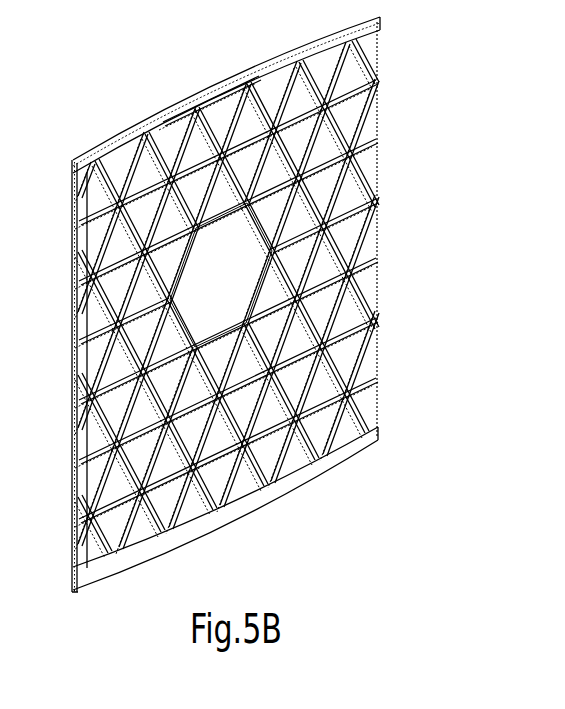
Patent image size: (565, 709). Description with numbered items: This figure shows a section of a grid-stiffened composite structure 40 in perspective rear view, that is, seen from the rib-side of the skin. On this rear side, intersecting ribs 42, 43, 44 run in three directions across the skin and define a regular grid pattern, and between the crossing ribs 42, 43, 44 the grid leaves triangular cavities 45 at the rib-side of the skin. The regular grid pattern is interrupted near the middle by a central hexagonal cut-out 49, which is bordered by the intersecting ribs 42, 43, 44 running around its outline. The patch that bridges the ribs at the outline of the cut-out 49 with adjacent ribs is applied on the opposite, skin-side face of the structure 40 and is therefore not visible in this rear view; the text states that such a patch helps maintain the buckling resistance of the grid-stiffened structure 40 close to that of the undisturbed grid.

The grid-stiffened composite structure 40 is at (156, 96).
The rib 42 is at (380, 105).
The rib 43 is at (90, 262).
The rib 44 is at (335, 195).
The triangular cavity 45 is at (350, 236).
The central hexagonal cut-out 49 is at (233, 267).